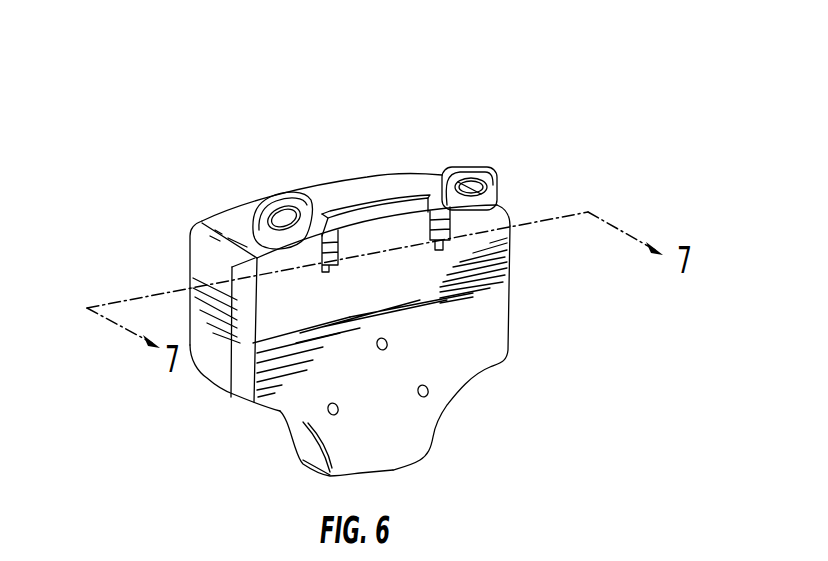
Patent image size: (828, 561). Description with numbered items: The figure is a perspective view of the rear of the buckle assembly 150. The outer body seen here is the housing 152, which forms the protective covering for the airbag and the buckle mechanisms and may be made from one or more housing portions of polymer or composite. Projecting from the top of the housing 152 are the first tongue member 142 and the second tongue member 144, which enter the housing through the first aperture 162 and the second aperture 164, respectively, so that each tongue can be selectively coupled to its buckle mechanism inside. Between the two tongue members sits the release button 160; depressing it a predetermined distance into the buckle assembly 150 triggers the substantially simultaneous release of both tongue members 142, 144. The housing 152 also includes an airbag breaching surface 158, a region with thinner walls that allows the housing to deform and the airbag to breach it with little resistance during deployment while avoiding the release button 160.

The first tongue member 142 is at (477, 176).
The second tongue member 144 is at (268, 212).
The buckle assembly 150 is at (476, 417).
The housing 152 is at (307, 407).
The airbag breaching surface 158 is at (357, 222).
The release button 160 is at (352, 212).
The first aperture 162 is at (510, 181).
The second aperture 164 is at (236, 234).